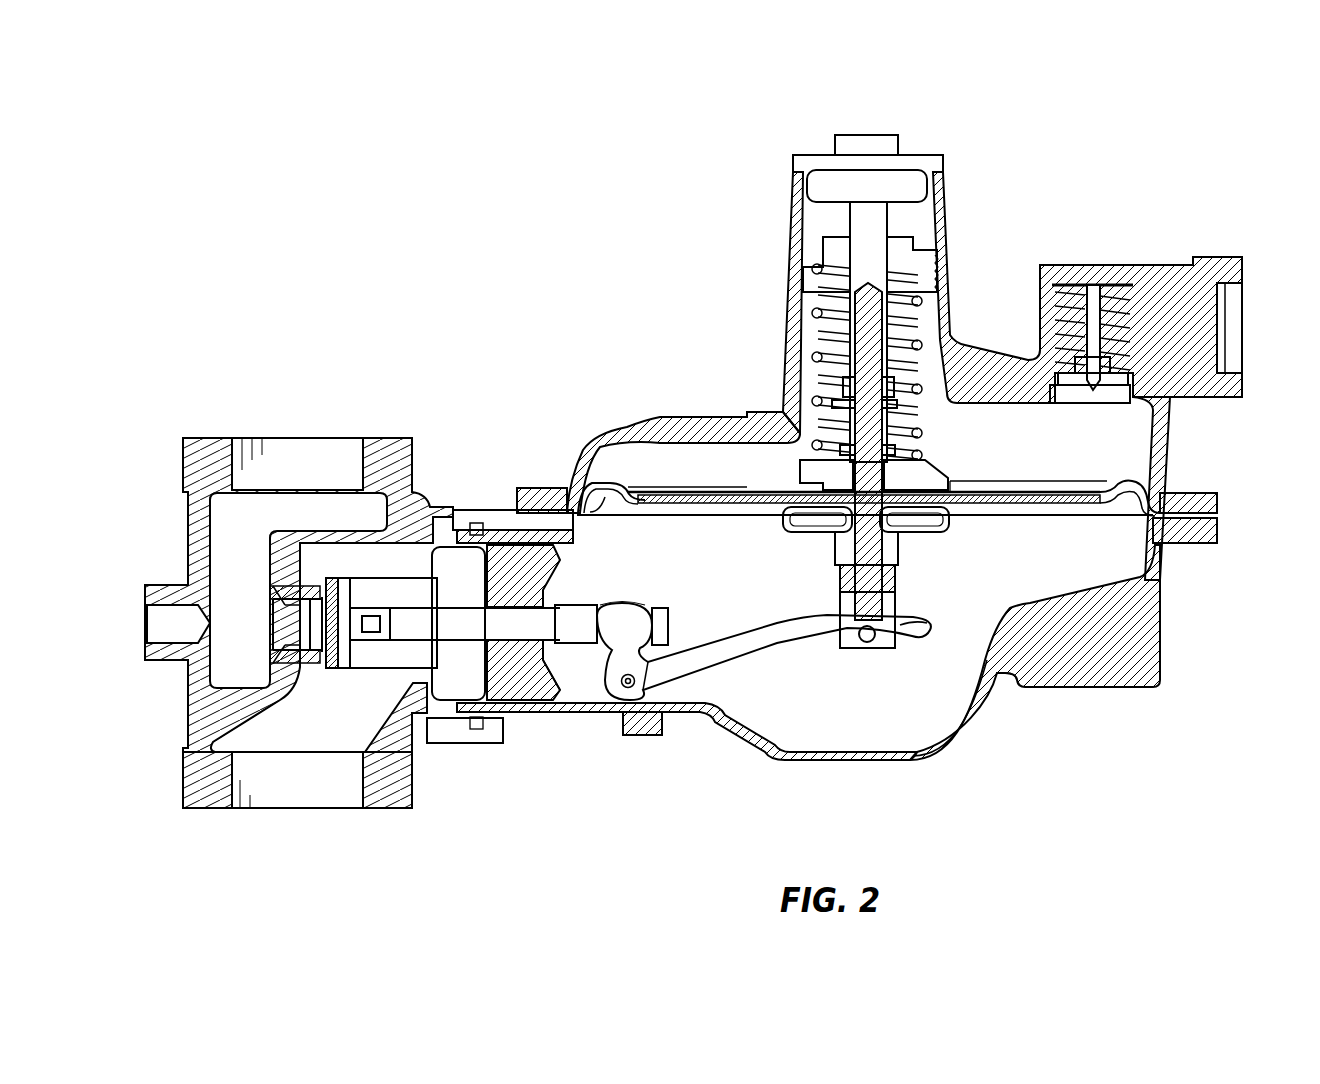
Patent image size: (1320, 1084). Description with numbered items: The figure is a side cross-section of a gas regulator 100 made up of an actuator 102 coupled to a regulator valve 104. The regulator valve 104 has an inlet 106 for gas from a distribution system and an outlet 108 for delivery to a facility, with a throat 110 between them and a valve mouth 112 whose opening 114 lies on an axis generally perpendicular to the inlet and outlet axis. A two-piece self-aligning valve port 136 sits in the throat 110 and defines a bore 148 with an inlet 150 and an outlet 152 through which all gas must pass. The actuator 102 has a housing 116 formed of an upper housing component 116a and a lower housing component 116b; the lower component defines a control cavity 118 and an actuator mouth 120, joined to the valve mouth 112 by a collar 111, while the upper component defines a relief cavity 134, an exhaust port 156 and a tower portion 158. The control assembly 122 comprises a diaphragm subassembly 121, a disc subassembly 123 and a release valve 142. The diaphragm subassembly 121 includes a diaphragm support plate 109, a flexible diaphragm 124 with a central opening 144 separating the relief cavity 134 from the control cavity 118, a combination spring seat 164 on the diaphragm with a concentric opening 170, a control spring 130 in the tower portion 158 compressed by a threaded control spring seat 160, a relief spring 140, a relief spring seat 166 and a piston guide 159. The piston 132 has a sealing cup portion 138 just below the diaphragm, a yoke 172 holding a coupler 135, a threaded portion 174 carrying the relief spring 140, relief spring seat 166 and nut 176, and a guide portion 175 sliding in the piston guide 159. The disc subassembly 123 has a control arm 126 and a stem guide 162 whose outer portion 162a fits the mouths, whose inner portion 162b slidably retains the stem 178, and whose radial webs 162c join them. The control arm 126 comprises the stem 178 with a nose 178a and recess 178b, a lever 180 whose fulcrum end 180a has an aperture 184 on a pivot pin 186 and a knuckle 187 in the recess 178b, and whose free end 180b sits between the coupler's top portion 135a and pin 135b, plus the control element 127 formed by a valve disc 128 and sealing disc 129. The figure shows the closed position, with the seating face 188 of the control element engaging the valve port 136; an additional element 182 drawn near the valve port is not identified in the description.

The gas regulator 100 is at (974, 132).
The actuator 102 is at (950, 210).
The regulator valve 104 is at (410, 436).
The inlet 106 is at (240, 456).
The outlet 108 is at (238, 793).
The diaphragm support plate 109 is at (719, 494).
The throat 110 is at (268, 657).
The collar 111 is at (477, 521).
The valve mouth 112 is at (432, 775).
The opening 114 is at (430, 576).
The housing 116 is at (1160, 645).
The upper housing component 116a is at (805, 198).
The lower housing component 116b is at (943, 749).
The control cavity 118 is at (966, 684).
The actuator mouth 120 is at (575, 714).
The diaphragm subassembly 121 is at (691, 516).
The control assembly 122 is at (941, 543).
The disc subassembly 123 is at (434, 738).
The diaphragm 124 is at (1135, 490).
The control arm 126 is at (631, 602).
The control element 127 is at (353, 677).
The valve disc 128 is at (346, 588).
The sealing disc 129 is at (328, 670).
The control spring 130 is at (836, 312).
The piston 132 is at (870, 440).
The relief cavity 134 is at (1143, 422).
The coupler 135 is at (913, 612).
The top portion 135a is at (837, 585).
The pin 135b is at (864, 652).
The self-aligning valve port 136 is at (148, 618).
The sealing cup portion 138 is at (947, 530).
The relief spring 140 is at (880, 413).
The release valve 142 is at (1128, 290).
The opening 144 is at (883, 452).
The bore 148 is at (268, 645).
The inlet 150 is at (288, 610).
The outlet 152 is at (318, 565).
The exhaust port 156 is at (1234, 297).
The tower portion 158 is at (822, 242).
The piston guide 159 is at (861, 222).
The control spring seat 160 is at (932, 237).
The stem guide 162 is at (540, 708).
The outer portion 162a is at (512, 545).
The inner portion 162b is at (543, 740).
The radial webs 162c is at (552, 522).
The combination spring seat 164 is at (821, 466).
The relief spring seat 166 is at (898, 400).
The opening 170 is at (778, 416).
The yoke 172 is at (896, 556).
The threaded portion 174 is at (866, 333).
The guide portion 175 is at (935, 285).
The nut 176 is at (848, 382).
The stem 178 is at (455, 614).
The nose 178a is at (386, 603).
The recess 178b is at (600, 606).
The lever 180 is at (786, 645).
The fulcrum end 180a is at (686, 672).
The free end 180b is at (922, 632).
The upper seal 182 is at (315, 567).
The aperture 184 is at (601, 704).
The pivot pin 186 is at (623, 677).
The knuckle 187 is at (641, 618).
The seating face 188 is at (302, 668).